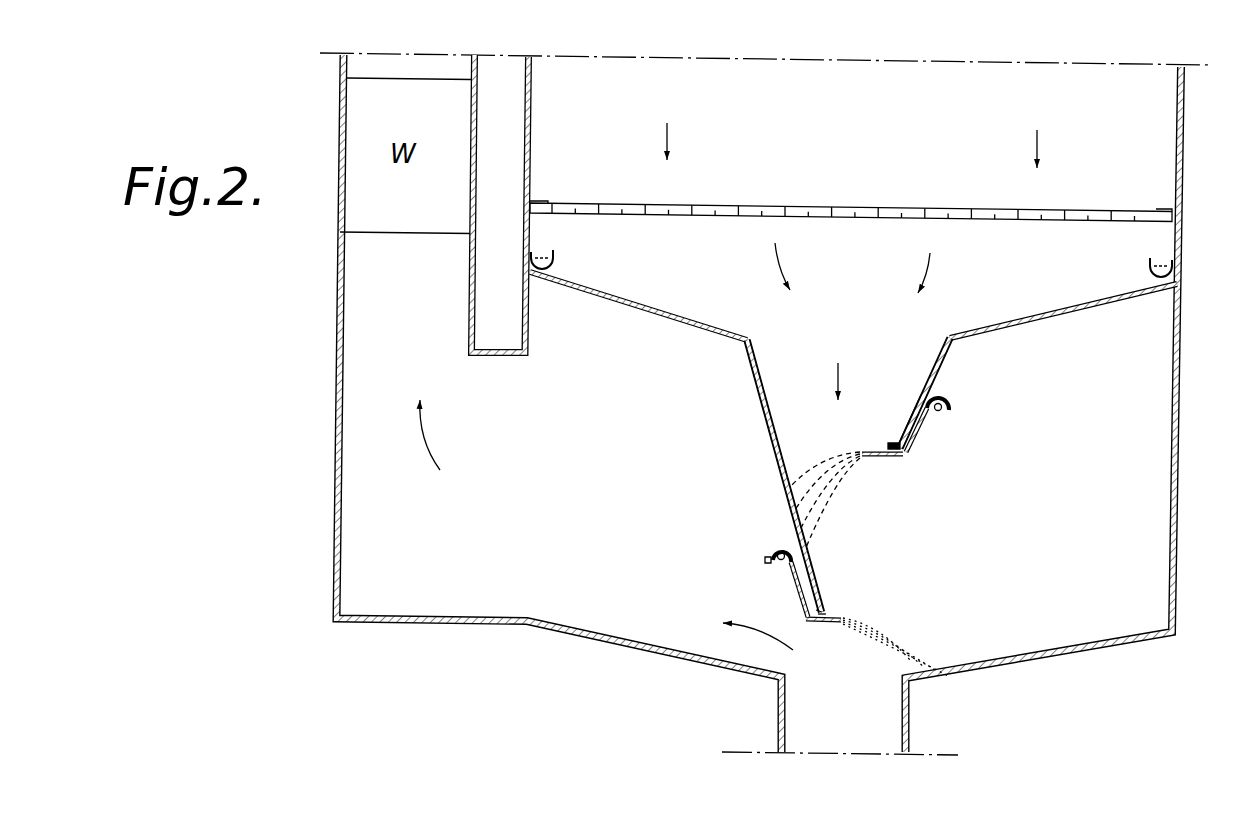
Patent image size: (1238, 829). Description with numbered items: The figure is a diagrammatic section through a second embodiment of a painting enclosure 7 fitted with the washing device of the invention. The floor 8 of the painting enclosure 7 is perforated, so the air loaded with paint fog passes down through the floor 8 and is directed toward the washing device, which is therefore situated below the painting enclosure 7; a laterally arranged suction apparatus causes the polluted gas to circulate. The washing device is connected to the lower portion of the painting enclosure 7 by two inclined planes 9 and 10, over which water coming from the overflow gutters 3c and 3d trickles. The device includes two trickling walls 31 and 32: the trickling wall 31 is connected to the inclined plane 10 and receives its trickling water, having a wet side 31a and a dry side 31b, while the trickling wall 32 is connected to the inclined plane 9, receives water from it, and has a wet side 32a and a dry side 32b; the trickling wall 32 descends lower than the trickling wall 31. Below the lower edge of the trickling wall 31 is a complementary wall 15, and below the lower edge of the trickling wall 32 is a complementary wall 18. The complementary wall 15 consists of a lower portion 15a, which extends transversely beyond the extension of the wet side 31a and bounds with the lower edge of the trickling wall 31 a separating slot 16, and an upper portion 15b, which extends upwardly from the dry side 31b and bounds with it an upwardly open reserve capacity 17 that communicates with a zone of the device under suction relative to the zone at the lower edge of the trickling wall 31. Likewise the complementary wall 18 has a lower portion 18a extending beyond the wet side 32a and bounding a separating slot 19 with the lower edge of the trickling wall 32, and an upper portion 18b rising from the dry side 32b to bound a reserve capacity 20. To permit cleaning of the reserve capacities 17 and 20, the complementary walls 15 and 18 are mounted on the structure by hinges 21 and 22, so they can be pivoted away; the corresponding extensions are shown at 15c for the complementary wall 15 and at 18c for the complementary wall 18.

The painting enclosure 7 is at (532, 115).
The floor 8 is at (837, 210).
The inclined plane 9 is at (678, 318).
The inclined plane 10 is at (1058, 312).
The overflow gutter 3c is at (556, 259).
The overflow gutter 3d is at (1149, 265).
The trickling wall 32 is at (755, 383).
The wet side 32a is at (763, 389).
The dry side 32b is at (768, 424).
The trickling wall 31 is at (928, 386).
The wet side 31a is at (942, 360).
The dry side 31b is at (951, 352).
The reserve capacity 17 is at (911, 420).
The separating slot 16 is at (892, 445).
The complementary wall 15 is at (934, 443).
The lower portion 15a is at (882, 458).
The upper portion 15b is at (914, 425).
The extension 15c is at (949, 403).
The hinge 21 is at (944, 409).
The hinge 22 is at (780, 551).
The complementary wall 18 is at (783, 585).
The lower portion 18a is at (833, 623).
The upper portion 18b is at (775, 589).
The extension 18c is at (765, 557).
The separating slot 19 is at (823, 616).
The reserve capacity 20 is at (820, 609).